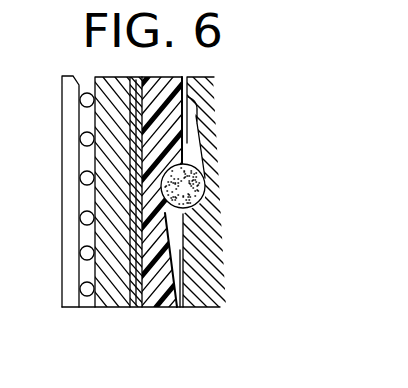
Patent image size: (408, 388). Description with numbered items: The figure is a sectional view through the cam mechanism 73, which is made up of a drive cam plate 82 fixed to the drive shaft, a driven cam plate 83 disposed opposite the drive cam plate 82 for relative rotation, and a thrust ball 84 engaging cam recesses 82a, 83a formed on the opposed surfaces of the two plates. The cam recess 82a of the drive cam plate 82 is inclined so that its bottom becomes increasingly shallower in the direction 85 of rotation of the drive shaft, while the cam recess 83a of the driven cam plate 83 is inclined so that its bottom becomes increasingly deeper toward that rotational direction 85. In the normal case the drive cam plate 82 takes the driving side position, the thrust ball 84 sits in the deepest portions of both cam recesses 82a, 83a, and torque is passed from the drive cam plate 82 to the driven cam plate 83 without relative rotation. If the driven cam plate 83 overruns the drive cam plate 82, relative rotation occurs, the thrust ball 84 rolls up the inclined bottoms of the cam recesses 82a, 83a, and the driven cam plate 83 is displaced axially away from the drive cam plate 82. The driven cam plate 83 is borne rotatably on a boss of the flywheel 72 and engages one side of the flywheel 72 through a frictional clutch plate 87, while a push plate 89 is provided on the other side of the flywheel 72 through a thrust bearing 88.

The flywheel 72 is at (110, 308).
The cam mechanism 73 is at (185, 308).
The drive cam plate 82 is at (214, 308).
The cam recess 82a is at (198, 114).
The driven cam plate 83 is at (164, 308).
The cam recess 83a is at (181, 242).
The thrust ball 84 is at (206, 201).
The direction of rotation 85 is at (240, 100).
The frictional clutch plate 87 is at (137, 308).
The thrust bearing 88 is at (80, 97).
The push plate 89 is at (63, 165).